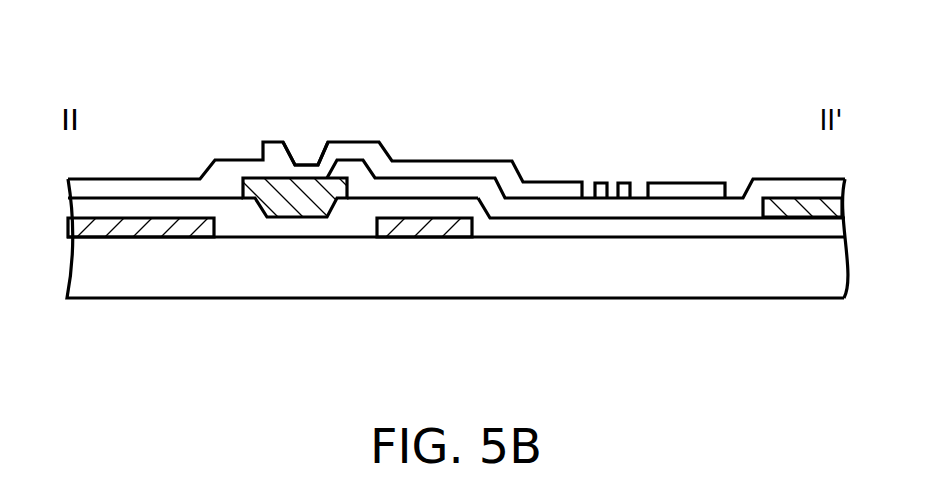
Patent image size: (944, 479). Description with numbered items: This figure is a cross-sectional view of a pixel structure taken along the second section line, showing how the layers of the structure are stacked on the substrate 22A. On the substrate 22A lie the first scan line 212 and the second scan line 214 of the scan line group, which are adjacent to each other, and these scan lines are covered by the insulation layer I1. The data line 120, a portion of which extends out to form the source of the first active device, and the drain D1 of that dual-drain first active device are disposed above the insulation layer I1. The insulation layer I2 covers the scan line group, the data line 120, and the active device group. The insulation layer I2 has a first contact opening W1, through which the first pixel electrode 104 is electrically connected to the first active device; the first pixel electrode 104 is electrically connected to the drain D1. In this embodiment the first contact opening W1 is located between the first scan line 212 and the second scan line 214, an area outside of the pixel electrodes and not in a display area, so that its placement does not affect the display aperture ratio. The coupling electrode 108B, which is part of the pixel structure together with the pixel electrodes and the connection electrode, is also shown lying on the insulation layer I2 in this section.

The substrate 22A is at (663, 260).
The insulation layer I1 is at (590, 231).
The insulation layer I2 is at (430, 186).
The first scan line 212 is at (170, 232).
The second scan line 214 is at (395, 232).
The data line 120 is at (797, 218).
The drain D1 is at (286, 196).
The first pixel electrode 104 is at (447, 173).
The coupling electrode 108B is at (698, 193).
The first contact opening W1 is at (280, 169).